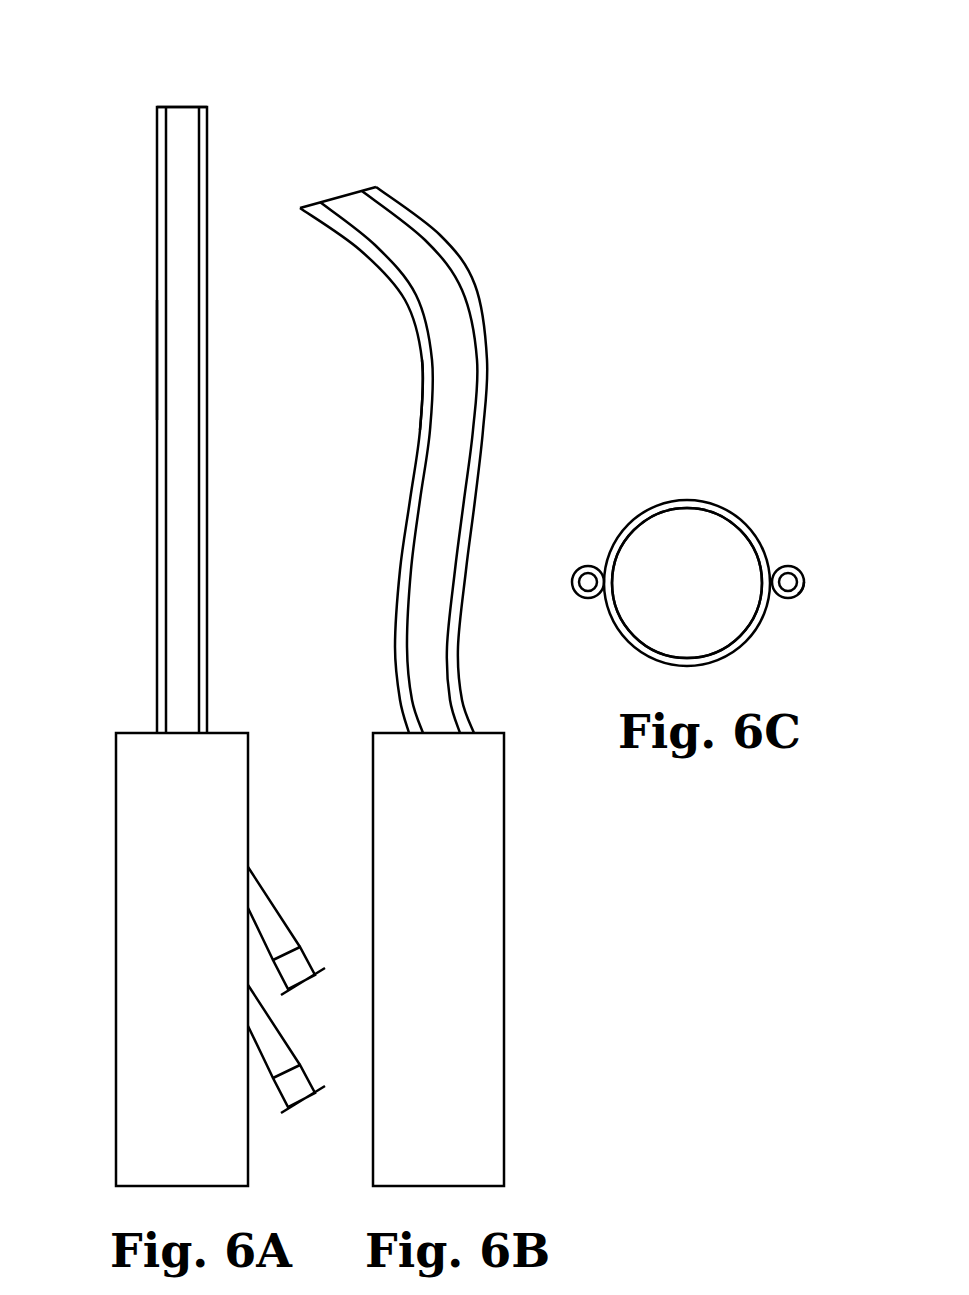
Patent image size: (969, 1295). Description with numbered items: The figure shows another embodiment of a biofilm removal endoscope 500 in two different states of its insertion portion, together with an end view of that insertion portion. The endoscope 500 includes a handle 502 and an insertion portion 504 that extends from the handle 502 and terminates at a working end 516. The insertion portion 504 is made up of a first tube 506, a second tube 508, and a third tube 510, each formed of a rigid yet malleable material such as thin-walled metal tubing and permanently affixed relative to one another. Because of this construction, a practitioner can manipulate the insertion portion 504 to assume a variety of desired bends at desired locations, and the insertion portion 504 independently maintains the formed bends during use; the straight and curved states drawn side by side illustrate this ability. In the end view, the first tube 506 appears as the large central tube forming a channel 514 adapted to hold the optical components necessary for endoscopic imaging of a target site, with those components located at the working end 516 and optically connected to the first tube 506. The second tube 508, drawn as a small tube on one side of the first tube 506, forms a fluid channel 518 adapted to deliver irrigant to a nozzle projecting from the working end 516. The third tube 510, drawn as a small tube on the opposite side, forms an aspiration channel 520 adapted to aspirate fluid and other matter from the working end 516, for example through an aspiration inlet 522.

In FIG. 6A, the biofilm removal endoscope 500 is at (192, 40).
In FIG. 6B, the biofilm removal endoscope 500 is at (448, 40).
In FIG. 6A, the handle 502 is at (142, 1004).
In FIG. 6B, the handle 502 is at (394, 807).
In FIG. 6A, the insertion portion 504 is at (142, 520).
In FIG. 6B, the insertion portion 504 is at (392, 507).
In FIG. 6C, the insertion portion 504 is at (717, 438).
In FIG. 6A, the first tube 506 is at (190, 200).
In FIG. 6B, the first tube 506 is at (416, 245).
In FIG. 6C, the first tube 506 is at (746, 508).
In FIG. 6A, the second tube 508 is at (153, 354).
In FIG. 6B, the second tube 508 is at (419, 368).
In FIG. 6C, the second tube 508 is at (585, 608).
In FIG. 6A, the third tube 510 is at (208, 446).
In FIG. 6B, the third tube 510 is at (489, 388).
In FIG. 6C, the third tube 510 is at (796, 609).
In FIG. 6C, the channel 514 is at (714, 628).
In FIG. 6A, the working end 516 is at (183, 107).
In FIG. 6B, the working end 516 is at (343, 193).
In FIG. 6C, the fluid channel 518 is at (583, 570).
In FIG. 6C, the aspiration channel 520 is at (793, 572).
In FIG. 6C, the aspiration inlet 522 is at (815, 579).